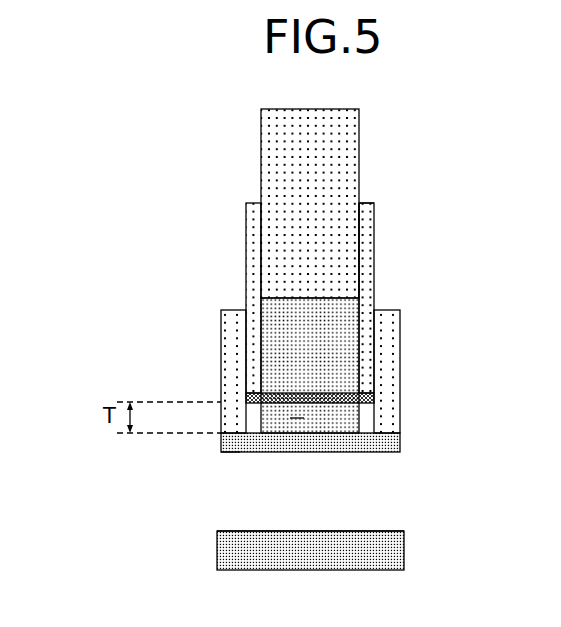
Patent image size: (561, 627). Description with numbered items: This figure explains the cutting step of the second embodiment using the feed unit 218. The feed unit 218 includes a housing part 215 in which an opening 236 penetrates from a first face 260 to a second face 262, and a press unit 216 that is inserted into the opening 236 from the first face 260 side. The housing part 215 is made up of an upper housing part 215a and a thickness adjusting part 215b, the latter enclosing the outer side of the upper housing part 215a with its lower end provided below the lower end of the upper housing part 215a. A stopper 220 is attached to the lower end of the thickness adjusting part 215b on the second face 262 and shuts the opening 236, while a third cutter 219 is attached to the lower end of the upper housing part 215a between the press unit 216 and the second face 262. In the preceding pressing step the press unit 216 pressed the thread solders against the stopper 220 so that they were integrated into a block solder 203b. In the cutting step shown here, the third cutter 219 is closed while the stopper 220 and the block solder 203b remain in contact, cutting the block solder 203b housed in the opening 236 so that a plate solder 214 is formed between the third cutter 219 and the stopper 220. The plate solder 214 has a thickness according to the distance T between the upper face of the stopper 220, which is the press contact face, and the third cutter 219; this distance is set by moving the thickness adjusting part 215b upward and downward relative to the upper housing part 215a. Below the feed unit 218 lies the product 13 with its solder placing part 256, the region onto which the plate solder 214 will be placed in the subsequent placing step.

The product 13 is at (400, 555).
The solder placing part 256 is at (319, 531).
The feed unit 218 is at (255, 136).
The press unit 216 is at (282, 160).
The block solder 203b is at (353, 352).
The housing part 215 is at (122, 214).
The upper housing part 215a is at (250, 240).
The thickness adjusting part 215b is at (232, 352).
The third cutter 219 is at (375, 400).
The stopper 220 is at (388, 446).
The first face 260 is at (363, 203).
The opening 236 is at (360, 246).
The plate solder 214 is at (297, 418).
The second face 262 is at (230, 440).